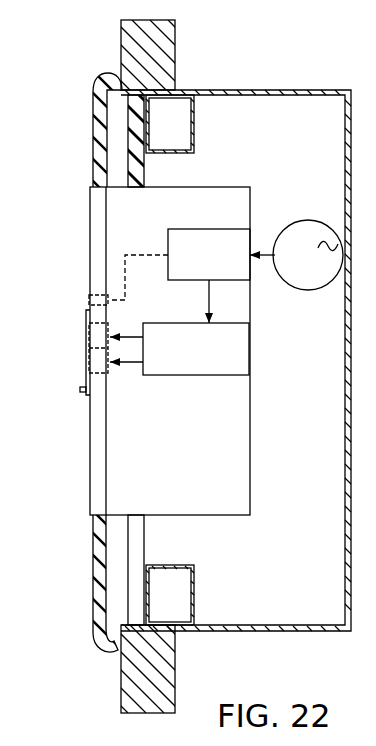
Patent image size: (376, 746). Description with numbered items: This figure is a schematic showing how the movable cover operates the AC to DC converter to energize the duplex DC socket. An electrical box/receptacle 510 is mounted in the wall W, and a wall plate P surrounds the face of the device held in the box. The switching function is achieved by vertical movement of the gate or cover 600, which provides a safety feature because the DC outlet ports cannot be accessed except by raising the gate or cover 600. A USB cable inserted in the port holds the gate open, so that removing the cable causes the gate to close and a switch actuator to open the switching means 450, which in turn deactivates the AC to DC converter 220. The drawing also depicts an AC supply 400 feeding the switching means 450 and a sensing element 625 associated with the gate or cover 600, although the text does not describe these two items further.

The wall W is at (121, 52).
The electrical box/receptacle 510 is at (270, 90).
The AC power source 400 is at (306, 220).
The switching means 450 is at (213, 229).
The sensor 625 is at (89, 300).
The gate or cover 600 is at (86, 340).
The AC to DC converter 220 is at (212, 377).
The wall plate P is at (94, 578).